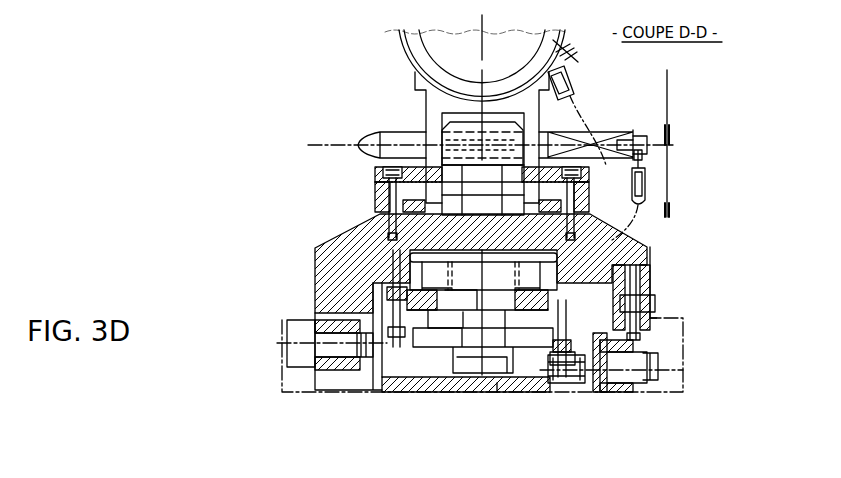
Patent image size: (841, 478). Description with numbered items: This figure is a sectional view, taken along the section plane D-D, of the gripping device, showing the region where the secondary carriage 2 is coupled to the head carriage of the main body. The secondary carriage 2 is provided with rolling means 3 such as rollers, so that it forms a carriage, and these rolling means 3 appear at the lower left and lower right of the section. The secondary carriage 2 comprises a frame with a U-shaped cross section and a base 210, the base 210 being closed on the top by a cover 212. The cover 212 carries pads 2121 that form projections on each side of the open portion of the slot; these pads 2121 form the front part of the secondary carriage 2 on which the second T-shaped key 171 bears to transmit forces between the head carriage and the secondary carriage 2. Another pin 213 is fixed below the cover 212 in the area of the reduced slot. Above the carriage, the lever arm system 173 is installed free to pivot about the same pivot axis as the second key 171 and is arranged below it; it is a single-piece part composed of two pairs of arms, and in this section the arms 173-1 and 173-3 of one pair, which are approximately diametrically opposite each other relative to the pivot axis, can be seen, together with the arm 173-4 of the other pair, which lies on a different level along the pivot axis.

The secondary carriage 2 is at (556, 350).
The rolling means 3 is at (385, 395).
The second T-shaped key 171 is at (545, 266).
The lever arm system 173 is at (447, 380).
The arm 173-1 is at (540, 338).
The arm 173-3 is at (420, 333).
The arm 173-4 is at (403, 263).
The base 210 is at (497, 385).
The cover 212 is at (635, 337).
The pin 213 is at (437, 292).
The pads 2121 is at (550, 275).